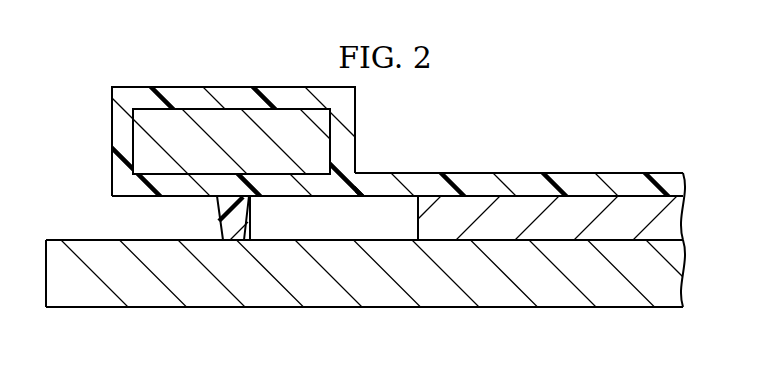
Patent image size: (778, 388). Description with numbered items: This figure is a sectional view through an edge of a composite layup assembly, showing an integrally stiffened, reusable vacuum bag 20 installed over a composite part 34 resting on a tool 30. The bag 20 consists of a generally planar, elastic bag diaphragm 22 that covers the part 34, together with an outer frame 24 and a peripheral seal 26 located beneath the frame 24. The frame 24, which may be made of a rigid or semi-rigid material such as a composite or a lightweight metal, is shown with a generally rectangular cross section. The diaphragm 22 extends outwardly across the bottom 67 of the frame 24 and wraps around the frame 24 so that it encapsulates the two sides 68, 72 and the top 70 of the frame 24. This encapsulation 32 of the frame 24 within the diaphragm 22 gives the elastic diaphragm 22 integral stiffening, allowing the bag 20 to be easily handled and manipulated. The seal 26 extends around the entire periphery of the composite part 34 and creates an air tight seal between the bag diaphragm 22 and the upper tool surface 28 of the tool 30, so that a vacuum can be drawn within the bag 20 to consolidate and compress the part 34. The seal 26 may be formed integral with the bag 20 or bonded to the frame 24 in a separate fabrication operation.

The vacuum bag 20 is at (493, 122).
The bag diaphragm 22 is at (470, 183).
The outer frame 24 is at (211, 117).
The peripheral seal 26 is at (217, 207).
The tool surface 28 is at (90, 240).
The tool 30 is at (90, 305).
The encapsulation 32 is at (118, 79).
The composite part 34 is at (596, 204).
The bottom of the frame 67 is at (302, 176).
The side of the frame 68 is at (343, 132).
The top of the frame 70 is at (272, 100).
The side of the frame 72 is at (133, 137).